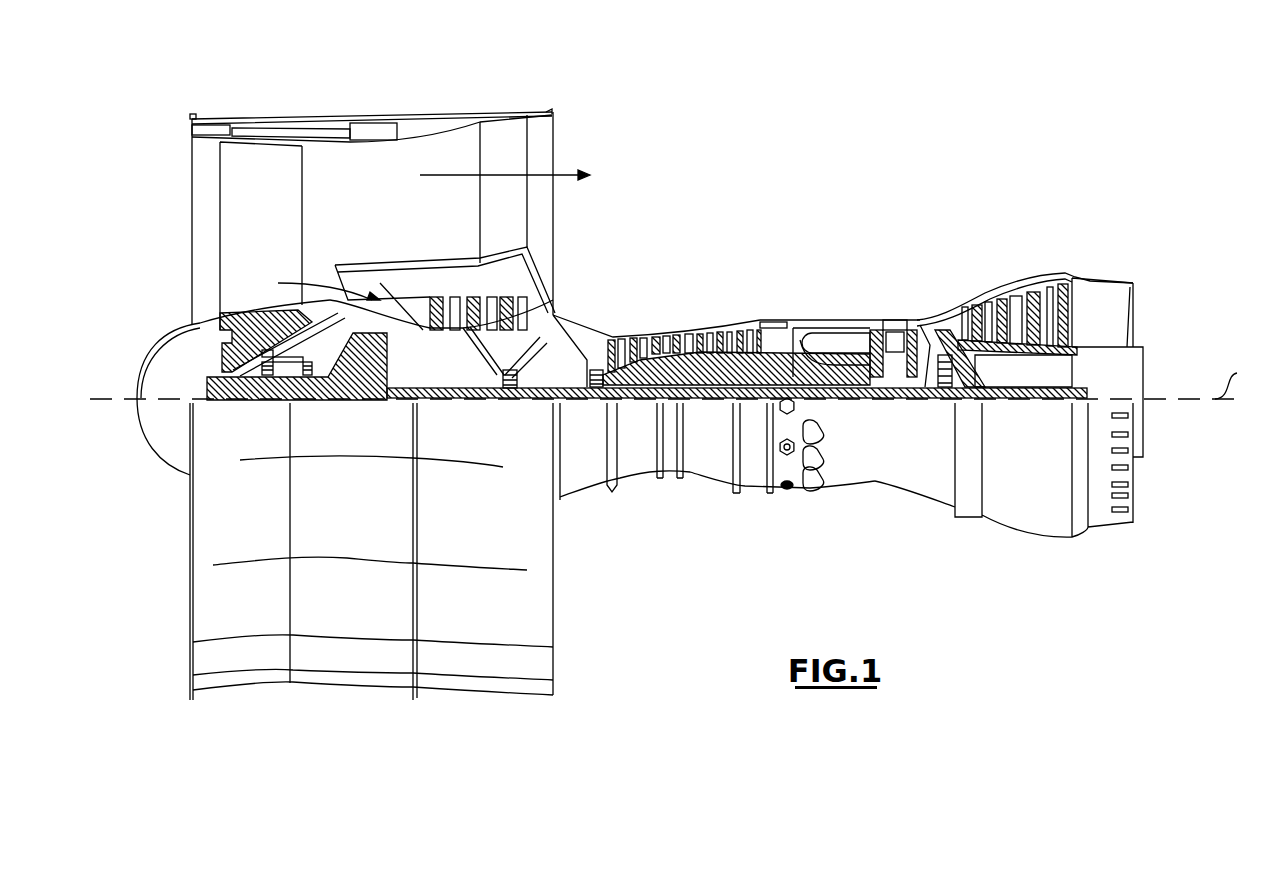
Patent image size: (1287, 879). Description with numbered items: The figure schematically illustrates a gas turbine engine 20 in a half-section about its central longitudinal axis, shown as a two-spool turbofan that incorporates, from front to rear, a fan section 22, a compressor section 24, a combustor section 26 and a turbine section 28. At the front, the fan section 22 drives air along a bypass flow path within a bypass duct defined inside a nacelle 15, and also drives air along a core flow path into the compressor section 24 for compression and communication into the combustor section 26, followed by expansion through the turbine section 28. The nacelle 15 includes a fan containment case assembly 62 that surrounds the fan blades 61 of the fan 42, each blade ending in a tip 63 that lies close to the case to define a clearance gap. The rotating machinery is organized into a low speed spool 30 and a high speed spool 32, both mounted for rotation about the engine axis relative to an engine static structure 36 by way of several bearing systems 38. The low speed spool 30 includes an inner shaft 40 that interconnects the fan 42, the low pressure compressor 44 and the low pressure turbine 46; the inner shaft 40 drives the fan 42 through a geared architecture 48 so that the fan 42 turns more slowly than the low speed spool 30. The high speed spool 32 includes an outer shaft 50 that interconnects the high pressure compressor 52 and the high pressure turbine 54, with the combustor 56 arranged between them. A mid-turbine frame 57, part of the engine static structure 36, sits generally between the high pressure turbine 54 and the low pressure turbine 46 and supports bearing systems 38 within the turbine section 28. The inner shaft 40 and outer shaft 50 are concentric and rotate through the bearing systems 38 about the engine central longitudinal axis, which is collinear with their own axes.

The nacelle 15 is at (351, 188).
The gas turbine engine 20 is at (830, 166).
The fan section 22 is at (345, 371).
The compressor section 24 is at (643, 345).
The combustor section 26 is at (840, 307).
The turbine section 28 is at (1006, 298).
The low speed spool 30 is at (711, 418).
The high speed spool 32 is at (753, 342).
The engine static structure 36 is at (860, 473).
The bearing systems 38 is at (505, 386).
The inner shaft 40 is at (571, 385).
The fan 42 is at (345, 421).
The low pressure compressor 44 is at (477, 310).
The low pressure turbine 46 is at (1018, 293).
The geared architecture 48 is at (378, 386).
The outer shaft 50 is at (833, 382).
The high pressure compressor 52 is at (683, 355).
The high pressure turbine 54 is at (887, 340).
The combustor 56 is at (827, 343).
The mid-turbine frame 57 is at (943, 338).
The fan blades 61 is at (243, 180).
The fan containment case assembly 62 is at (206, 112).
The tip 63 is at (248, 140).